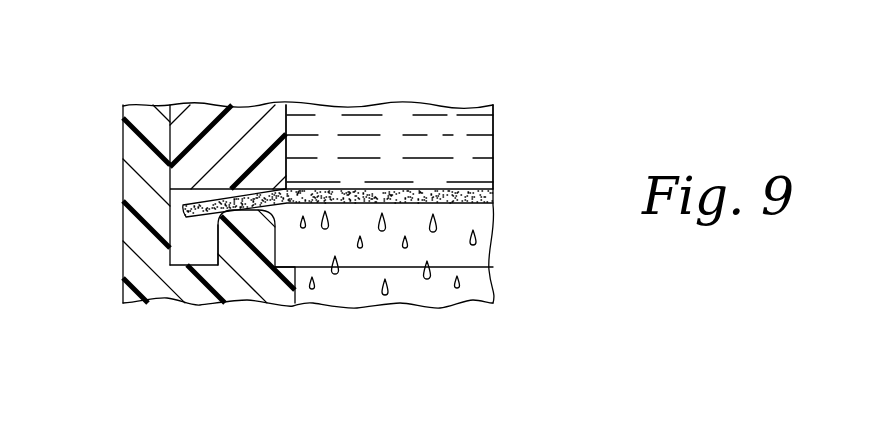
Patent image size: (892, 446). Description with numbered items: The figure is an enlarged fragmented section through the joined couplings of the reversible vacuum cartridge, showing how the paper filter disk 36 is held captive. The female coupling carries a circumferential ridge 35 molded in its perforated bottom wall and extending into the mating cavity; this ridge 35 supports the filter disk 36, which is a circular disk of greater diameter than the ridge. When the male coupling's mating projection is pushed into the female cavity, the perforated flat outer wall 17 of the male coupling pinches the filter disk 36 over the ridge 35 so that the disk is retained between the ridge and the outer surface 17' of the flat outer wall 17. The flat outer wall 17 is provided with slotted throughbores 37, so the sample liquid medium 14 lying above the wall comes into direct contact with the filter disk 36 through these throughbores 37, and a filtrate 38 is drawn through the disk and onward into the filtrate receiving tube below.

The perforated flat outer wall 17 is at (209, 159).
The outer surface of the perforated flat outer wall 17' is at (139, 231).
The circumferential ridge 35 is at (252, 227).
The paper filter disk 36 is at (493, 198).
The slotted throughbores 37 is at (357, 135).
The sample liquid medium 14 is at (421, 150).
The filtrate 38 is at (455, 286).